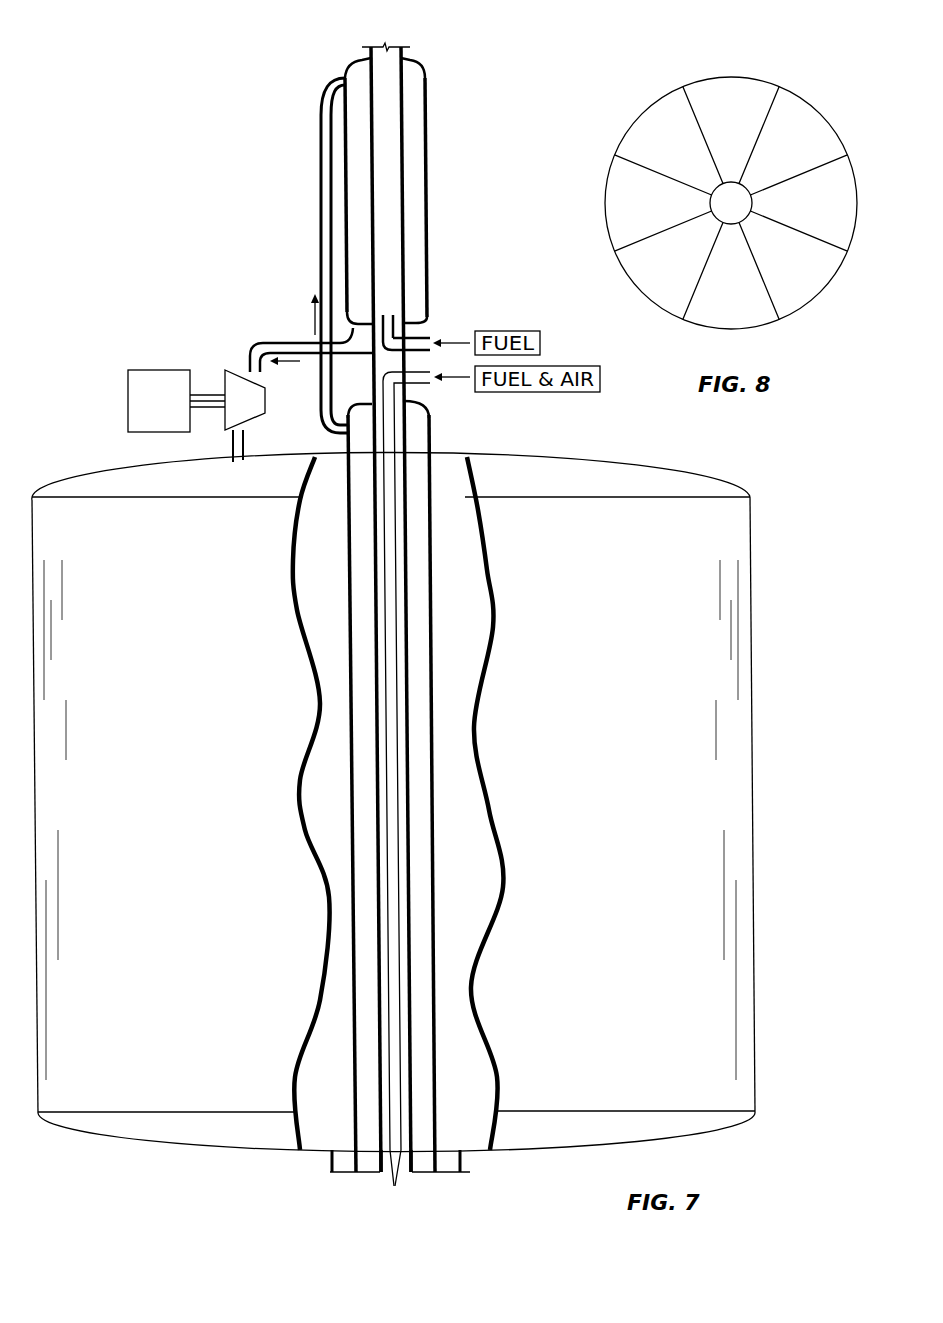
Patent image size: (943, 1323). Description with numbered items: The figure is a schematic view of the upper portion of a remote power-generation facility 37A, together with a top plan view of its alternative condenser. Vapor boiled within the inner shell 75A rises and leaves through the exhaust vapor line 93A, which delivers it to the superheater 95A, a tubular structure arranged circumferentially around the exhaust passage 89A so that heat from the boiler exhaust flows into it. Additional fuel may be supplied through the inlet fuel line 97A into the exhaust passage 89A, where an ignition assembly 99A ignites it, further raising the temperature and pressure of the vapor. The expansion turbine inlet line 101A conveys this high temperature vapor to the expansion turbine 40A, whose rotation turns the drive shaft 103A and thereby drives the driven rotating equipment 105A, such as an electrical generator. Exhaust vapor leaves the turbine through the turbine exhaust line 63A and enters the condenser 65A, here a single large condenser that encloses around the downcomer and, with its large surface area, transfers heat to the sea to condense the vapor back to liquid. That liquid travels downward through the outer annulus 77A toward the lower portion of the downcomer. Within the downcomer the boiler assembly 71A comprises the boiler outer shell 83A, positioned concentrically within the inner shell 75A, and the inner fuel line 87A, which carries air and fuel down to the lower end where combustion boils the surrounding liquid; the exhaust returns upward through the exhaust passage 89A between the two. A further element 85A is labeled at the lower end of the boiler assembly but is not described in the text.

In FIG. 7, the remote power-generation facility 37A is at (121, 127).
In FIG. 7, the exhaust vapor line 93A is at (318, 150).
In FIG. 7, the superheater 95A is at (428, 125).
In FIG. 7, the ignition assembly 99A is at (386, 312).
In FIG. 7, the inlet fuel line 97A is at (428, 340).
In FIG. 7, the expansion turbine inlet line 101A is at (303, 340).
In FIG. 7, the expansion turbine 40A is at (245, 368).
In FIG. 7, the driven rotating equipment 105A is at (145, 370).
In FIG. 7, the drive shaft 103A is at (213, 393).
In FIG. 7, the turbine exhaust line 63A is at (245, 442).
In FIG. 7, the condenser 65A is at (92, 473).
In FIG. 8, the condenser 65A is at (728, 76).
In FIG. 7, the boiler assembly 71A is at (410, 402).
In FIG. 7, the inner shell 75A is at (433, 750).
In FIG. 7, the inner fuel line 87A is at (398, 913).
In FIG. 7, the boiler outer shell 83A is at (437, 1078).
In FIG. 7, the exhaust passage 89A is at (385, 1176).
In FIG. 7, the center tube outlet 85A is at (423, 1180).
In FIG. 7, the outer annulus 77A is at (452, 1178).